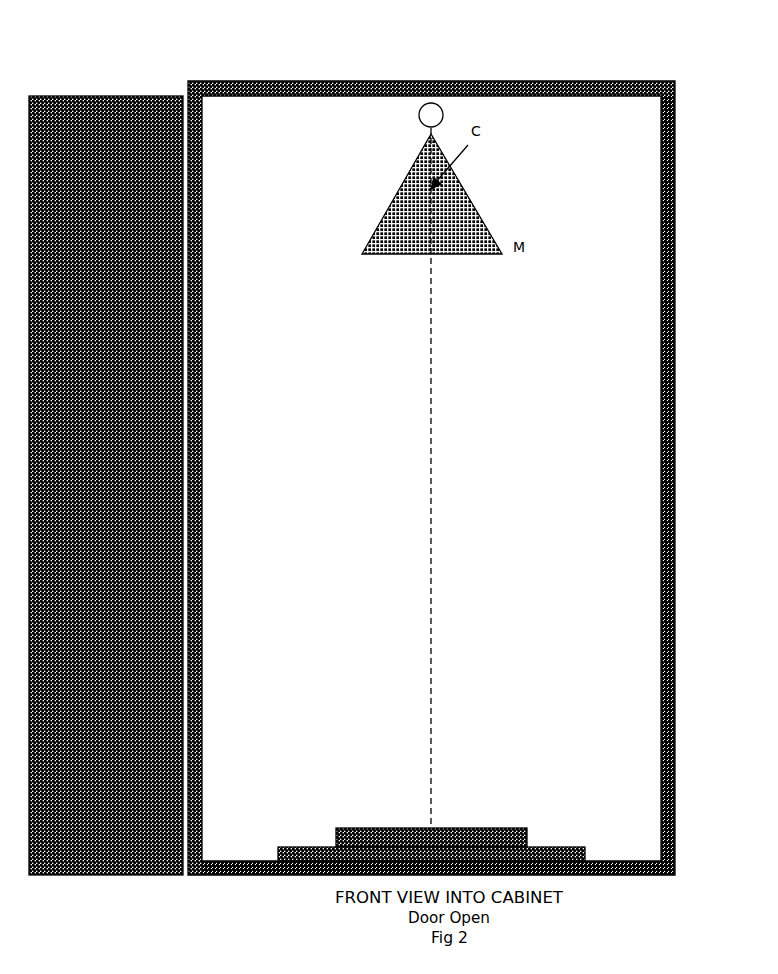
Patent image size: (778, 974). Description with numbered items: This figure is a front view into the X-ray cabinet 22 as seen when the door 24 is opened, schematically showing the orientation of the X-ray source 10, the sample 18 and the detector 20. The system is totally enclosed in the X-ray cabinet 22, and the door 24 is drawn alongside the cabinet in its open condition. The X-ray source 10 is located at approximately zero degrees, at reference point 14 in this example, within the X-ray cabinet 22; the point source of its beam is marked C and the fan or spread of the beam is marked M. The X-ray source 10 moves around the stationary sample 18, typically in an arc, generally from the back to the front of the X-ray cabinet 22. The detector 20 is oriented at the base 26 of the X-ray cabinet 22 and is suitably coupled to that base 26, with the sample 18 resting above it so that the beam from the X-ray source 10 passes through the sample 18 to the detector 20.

The X-ray source 10 is at (376, 194).
The reference point 14 is at (431, 115).
The sample 18 is at (380, 806).
The detector 20 is at (463, 827).
The X-ray cabinet 22 is at (194, 662).
The door 24 is at (108, 88).
The base 26 is at (593, 508).